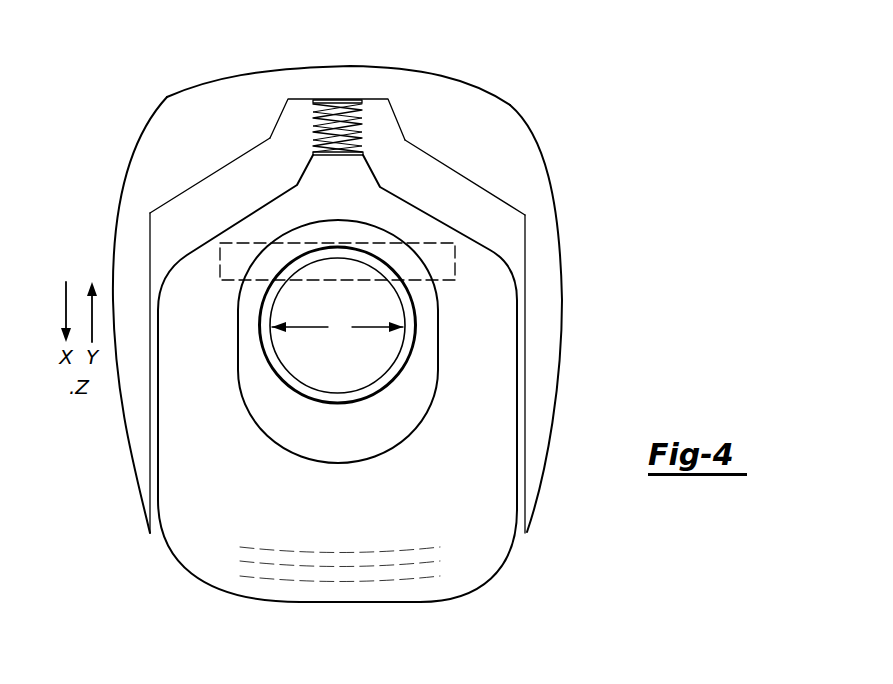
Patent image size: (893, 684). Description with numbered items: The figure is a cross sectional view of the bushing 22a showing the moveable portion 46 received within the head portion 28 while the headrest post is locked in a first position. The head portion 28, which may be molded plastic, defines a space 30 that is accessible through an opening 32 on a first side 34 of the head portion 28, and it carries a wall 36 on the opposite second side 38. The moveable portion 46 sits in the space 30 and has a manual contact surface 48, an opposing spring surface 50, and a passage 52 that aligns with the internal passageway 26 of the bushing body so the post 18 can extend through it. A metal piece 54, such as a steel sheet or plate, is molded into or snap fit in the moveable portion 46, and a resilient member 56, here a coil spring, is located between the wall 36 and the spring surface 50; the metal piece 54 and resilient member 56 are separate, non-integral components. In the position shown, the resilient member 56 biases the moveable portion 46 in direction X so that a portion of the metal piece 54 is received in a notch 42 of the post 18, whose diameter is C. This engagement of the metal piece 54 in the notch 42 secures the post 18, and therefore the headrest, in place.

The bushing 22a is at (638, 107).
The head portion 28 is at (480, 100).
The space 30 is at (468, 193).
The opening 32 is at (523, 535).
The first side 34 is at (150, 534).
The wall 36 is at (303, 100).
The second side 38 is at (355, 66).
The spring surface 50 is at (363, 153).
The resilient member 56 is at (300, 128).
The moveable portion 46 is at (487, 378).
The manual contact surface 48 is at (413, 601).
The passage 52 is at (438, 342).
The internal passageway 26 is at (417, 310).
The notch 42 is at (362, 272).
The post 18 is at (367, 390).
The metal piece 54 is at (442, 250).